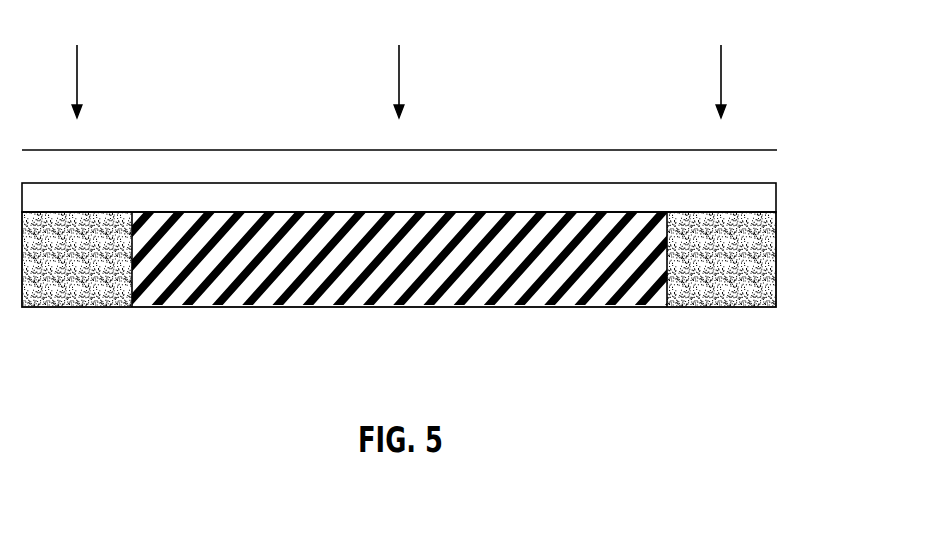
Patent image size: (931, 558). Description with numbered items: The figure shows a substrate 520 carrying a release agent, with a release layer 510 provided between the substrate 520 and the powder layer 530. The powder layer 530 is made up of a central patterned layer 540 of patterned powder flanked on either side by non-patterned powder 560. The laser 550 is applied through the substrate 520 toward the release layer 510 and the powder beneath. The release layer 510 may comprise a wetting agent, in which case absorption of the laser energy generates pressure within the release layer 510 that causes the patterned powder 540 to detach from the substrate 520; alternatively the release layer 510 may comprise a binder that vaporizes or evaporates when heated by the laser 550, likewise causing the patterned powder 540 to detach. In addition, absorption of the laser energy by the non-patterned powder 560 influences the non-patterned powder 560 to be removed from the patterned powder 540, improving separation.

The release layer 510 is at (760, 202).
The substrate 520 is at (213, 170).
The powder layer 530 is at (796, 212).
The patterned layer 540 is at (427, 291).
The laser 550 is at (101, 41).
The non-patterned powder 560 is at (80, 291).